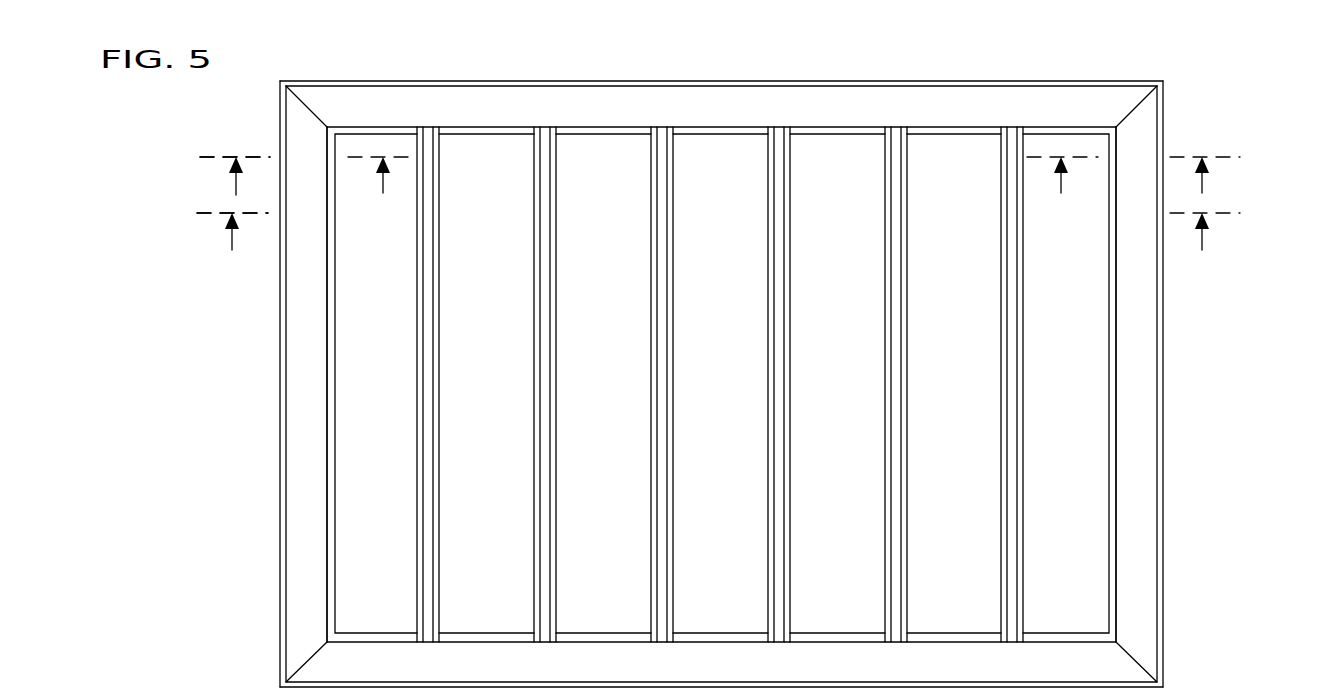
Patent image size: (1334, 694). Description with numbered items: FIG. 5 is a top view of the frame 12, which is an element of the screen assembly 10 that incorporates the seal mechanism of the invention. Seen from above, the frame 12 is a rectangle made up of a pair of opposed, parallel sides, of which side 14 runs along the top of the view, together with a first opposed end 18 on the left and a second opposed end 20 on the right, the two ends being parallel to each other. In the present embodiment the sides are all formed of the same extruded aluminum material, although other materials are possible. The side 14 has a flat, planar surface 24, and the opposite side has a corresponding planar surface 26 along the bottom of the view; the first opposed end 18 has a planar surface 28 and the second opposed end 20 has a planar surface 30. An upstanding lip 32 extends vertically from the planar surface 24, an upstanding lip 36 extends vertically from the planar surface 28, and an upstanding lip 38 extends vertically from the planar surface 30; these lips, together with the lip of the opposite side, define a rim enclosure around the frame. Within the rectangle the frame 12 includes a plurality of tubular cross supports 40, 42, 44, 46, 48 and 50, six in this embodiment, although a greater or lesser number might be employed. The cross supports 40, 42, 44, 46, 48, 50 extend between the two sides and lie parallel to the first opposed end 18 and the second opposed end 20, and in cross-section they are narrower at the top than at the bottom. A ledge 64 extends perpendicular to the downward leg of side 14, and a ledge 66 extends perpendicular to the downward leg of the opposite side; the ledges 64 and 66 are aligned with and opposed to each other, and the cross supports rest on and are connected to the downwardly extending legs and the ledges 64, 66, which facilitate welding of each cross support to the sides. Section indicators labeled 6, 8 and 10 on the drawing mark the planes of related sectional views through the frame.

The section line 6- 6 is at (718, 234).
The section line 8- 8 is at (307, 179).
The screen assembly 10 is at (1136, 179).
The frame 12 is at (185, 197).
The side 14 is at (702, 62).
The first opposed end 18 is at (227, 320).
The second opposed end 20 is at (1212, 394).
The planar surface 24 is at (898, 102).
The planar surface 26 is at (857, 660).
The planar surface 28 is at (304, 433).
The planar surface 30 is at (1140, 320).
The upstanding lip 32 is at (543, 82).
The upstanding lip 36 is at (284, 530).
The upstanding lip 38 is at (1163, 492).
The tubular cross support 40 is at (430, 334).
The tubular cross support 42 is at (547, 334).
The tubular cross support 44 is at (664, 334).
The tubular cross support 46 is at (781, 334).
The tubular cross support 48 is at (898, 334).
The tubular cross support 50 is at (1015, 334).
The ledge 64 is at (708, 134).
The ledge 66 is at (733, 633).